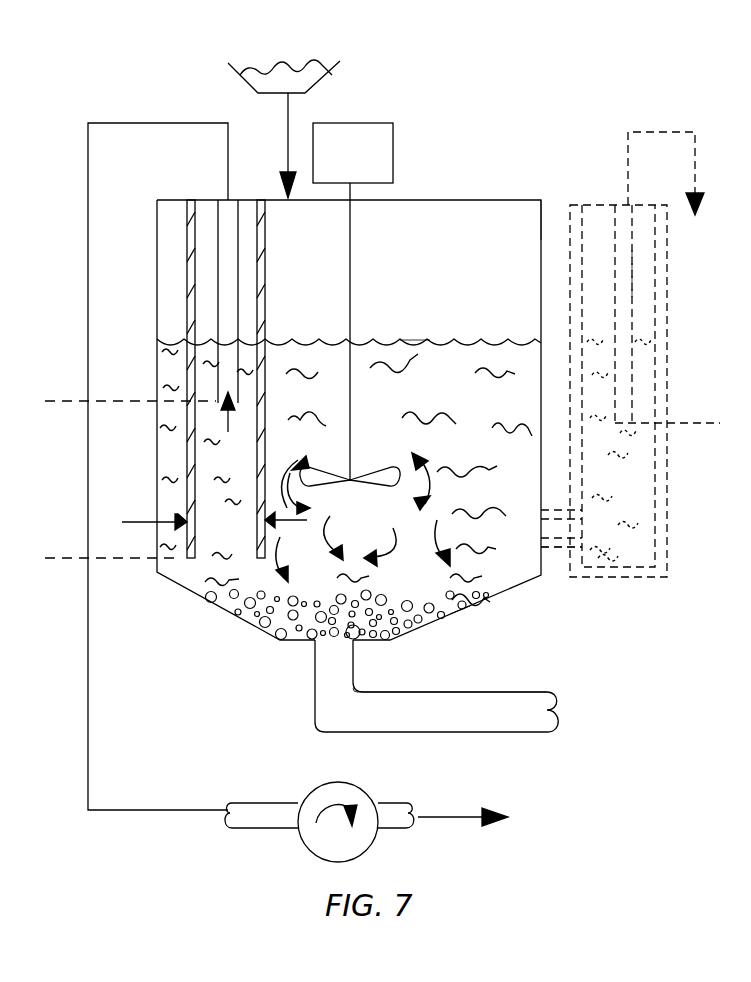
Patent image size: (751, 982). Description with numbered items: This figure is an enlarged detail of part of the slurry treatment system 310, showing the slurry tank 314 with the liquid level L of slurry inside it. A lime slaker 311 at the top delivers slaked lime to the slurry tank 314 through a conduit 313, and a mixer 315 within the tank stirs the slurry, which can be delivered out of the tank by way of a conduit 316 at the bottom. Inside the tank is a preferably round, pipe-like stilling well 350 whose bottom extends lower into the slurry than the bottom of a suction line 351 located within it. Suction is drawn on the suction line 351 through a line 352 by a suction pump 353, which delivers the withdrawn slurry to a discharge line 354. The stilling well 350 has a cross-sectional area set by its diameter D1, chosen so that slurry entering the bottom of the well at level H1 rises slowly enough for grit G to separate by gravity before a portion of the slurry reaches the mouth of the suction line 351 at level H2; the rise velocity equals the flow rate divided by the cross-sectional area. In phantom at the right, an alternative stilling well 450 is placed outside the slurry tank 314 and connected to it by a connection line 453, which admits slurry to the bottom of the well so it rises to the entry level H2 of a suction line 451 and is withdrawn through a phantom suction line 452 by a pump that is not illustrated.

The slurry treatment system 310 is at (455, 732).
The lime slaker 311 is at (312, 88).
The conduit 313 is at (290, 116).
The slurry tank 314 is at (523, 200).
The mixer 315 is at (350, 233).
The conduit 316 is at (412, 692).
The stilling well 350 is at (265, 292).
The suction line 351 is at (228, 220).
The suction line 352 is at (88, 700).
The suction pump 353 is at (360, 853).
The discharge line 354 is at (393, 803).
The stilling well 450 is at (572, 230).
The suction line 451 is at (629, 238).
The suction line 452 is at (638, 128).
The connection line 453 is at (552, 547).
The liquid level L is at (413, 342).
The grit G is at (468, 610).
The level H1 is at (66, 557).
The level H2 is at (64, 401).
The diameter D1 is at (259, 522).